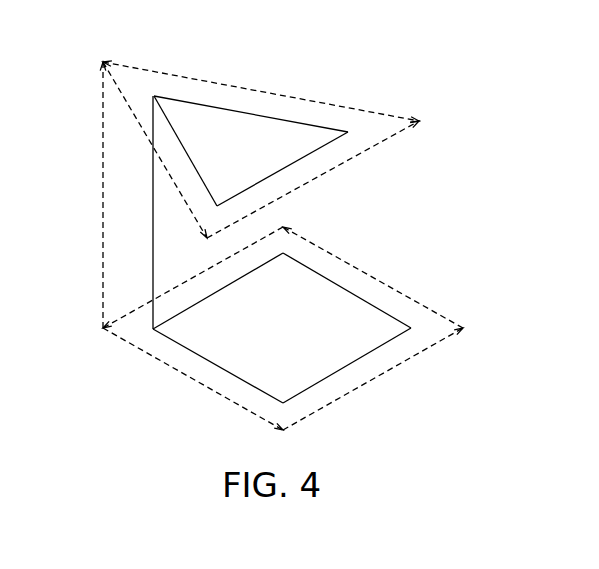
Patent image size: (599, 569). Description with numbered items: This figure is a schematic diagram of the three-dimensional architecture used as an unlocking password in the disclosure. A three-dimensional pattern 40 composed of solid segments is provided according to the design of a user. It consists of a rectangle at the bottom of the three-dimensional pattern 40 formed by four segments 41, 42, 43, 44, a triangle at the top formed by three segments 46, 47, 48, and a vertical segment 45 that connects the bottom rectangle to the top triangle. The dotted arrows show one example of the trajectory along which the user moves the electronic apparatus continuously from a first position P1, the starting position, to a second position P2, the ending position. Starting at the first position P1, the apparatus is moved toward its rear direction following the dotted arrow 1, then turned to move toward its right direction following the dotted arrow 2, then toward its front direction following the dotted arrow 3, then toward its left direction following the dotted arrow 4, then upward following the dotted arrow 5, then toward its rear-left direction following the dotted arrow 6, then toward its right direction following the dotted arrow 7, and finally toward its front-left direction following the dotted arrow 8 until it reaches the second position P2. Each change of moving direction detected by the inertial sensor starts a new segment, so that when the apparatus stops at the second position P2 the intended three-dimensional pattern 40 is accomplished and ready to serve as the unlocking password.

The three-dimensional pattern 40 is at (274, 249).
The segment 41 is at (225, 369).
The segment 42 is at (355, 360).
The segment 43 is at (343, 289).
The segment 44 is at (212, 295).
The vertical segment 45 is at (152, 238).
The segment 46 is at (199, 176).
The segment 47 is at (283, 167).
The segment 48 is at (277, 118).
The dotted arrow 1 is at (193, 379).
The dotted arrow 2 is at (373, 379).
The dotted arrow 3 is at (373, 277).
The dotted arrow 4 is at (193, 277).
The dotted arrow 5 is at (94, 195).
The dotted arrow 6 is at (155, 150).
The dotted arrow 7 is at (313, 179).
The dotted arrow 8 is at (261, 90).
The first position P1 is at (85, 333).
The second position P2 is at (103, 43).